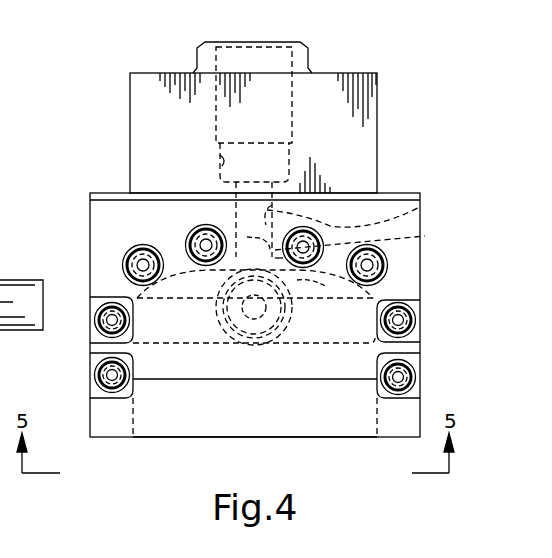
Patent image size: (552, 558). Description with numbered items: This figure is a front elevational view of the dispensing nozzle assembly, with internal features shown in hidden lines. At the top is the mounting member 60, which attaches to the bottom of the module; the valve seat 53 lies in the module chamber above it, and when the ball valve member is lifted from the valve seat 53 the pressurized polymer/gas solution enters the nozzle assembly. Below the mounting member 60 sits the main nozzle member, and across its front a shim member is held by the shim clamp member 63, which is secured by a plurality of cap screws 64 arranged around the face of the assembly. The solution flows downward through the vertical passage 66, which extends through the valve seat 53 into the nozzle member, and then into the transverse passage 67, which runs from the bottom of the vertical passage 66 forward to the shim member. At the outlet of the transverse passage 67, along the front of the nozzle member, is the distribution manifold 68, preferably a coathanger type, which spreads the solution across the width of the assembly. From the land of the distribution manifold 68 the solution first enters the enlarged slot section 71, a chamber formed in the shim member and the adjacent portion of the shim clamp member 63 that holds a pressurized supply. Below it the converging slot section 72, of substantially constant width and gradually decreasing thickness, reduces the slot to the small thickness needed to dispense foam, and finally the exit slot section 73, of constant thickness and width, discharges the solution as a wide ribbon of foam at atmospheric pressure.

The mounting member 60 is at (143, 98).
The valve seat 53 is at (215, 157).
The shim clamp member 63 is at (115, 217).
The cap screws 64 is at (132, 255).
The vertical passage 66 is at (420, 207).
The transverse passage 67 is at (425, 236).
The distribution manifold 68 is at (375, 297).
The enlarged slot section 71 is at (175, 322).
The converging slot section 72 is at (183, 372).
The exit slot section 73 is at (168, 417).